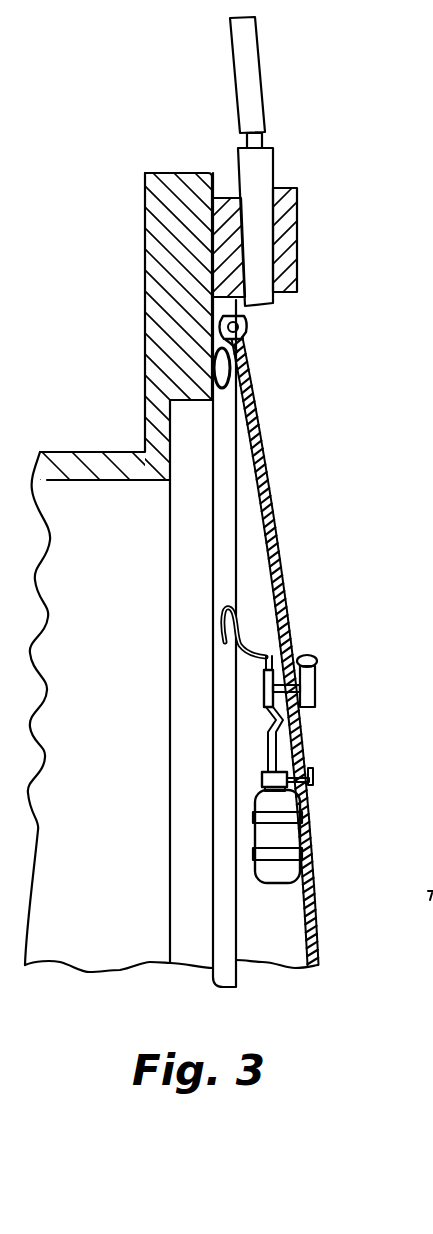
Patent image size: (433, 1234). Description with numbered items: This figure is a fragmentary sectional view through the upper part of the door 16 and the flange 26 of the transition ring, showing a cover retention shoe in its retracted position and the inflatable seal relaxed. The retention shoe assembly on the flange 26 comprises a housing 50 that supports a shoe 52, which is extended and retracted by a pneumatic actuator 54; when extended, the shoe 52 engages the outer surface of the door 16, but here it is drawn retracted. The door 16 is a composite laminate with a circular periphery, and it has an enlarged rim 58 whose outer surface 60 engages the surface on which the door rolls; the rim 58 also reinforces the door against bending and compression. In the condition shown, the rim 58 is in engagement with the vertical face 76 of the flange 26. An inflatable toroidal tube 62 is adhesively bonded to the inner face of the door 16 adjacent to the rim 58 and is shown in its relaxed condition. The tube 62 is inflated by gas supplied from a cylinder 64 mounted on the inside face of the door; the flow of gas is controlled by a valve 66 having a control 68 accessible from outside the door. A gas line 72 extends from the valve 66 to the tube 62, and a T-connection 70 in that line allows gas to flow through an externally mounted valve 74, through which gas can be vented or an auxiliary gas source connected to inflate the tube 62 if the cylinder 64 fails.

The door 16 is at (273, 527).
The flange 26 is at (157, 307).
The housing 50 is at (293, 238).
The shoe 52 is at (263, 165).
The pneumatic actuator 54 is at (250, 72).
The rim 58 is at (240, 337).
The outer surface 60 is at (240, 313).
The toroidal tube 62 is at (224, 458).
The cylinder 64 is at (262, 838).
The valve 66 is at (257, 783).
The control 68 is at (297, 782).
The T-connection 70 is at (263, 690).
The gas line 72 is at (232, 645).
The valve 74 is at (315, 688).
The vertical face 76 is at (217, 263).